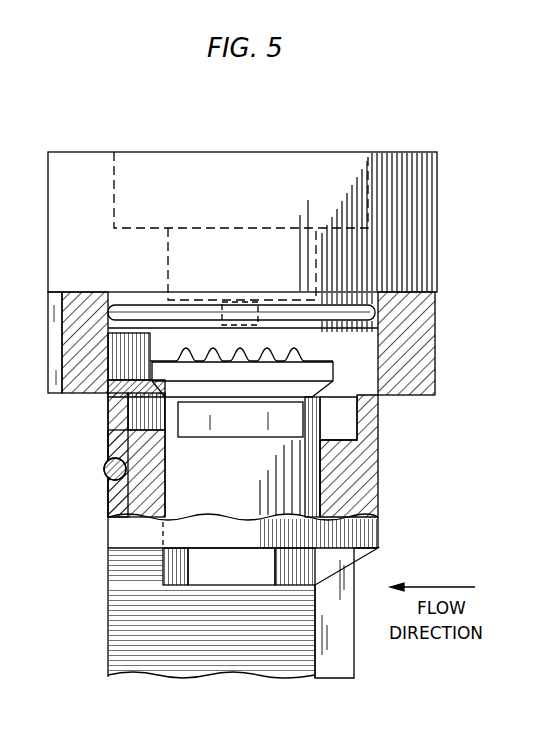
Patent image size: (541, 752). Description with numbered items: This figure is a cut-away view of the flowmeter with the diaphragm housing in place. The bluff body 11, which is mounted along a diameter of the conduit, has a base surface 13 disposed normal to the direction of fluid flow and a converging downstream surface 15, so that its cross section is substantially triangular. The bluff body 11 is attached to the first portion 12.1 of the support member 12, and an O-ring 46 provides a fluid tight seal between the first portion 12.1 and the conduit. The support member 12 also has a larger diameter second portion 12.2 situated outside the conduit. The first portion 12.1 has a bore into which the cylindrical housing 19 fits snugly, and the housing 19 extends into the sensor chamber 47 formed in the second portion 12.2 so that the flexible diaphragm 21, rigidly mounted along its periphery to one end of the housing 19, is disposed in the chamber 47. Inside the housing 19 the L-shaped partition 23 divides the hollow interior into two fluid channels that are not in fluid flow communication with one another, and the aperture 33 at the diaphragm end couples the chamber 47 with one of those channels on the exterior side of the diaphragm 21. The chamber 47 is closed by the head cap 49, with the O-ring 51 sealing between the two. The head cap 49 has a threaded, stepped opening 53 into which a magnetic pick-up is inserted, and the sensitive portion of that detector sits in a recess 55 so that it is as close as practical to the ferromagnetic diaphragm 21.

The head cap 49 is at (437, 214).
The threaded, stepped opening 53 is at (118, 176).
The recess 55 is at (240, 312).
The O-ring 51 is at (437, 305).
The support member 12 is at (436, 350).
The first portion 12.1 is at (108, 420).
The second portion 12.2 is at (48, 354).
The sensor chamber 47 is at (118, 356).
The flexible diaphragm 21 is at (303, 346).
The cylindrical housing 19 is at (322, 417).
The aperture 33 is at (237, 423).
The O-ring 46 is at (104, 470).
The L-shaped partition 23 is at (198, 563).
The bluff body 11 is at (125, 636).
The converging downstream surface 15 is at (212, 645).
The base surface 13 is at (340, 660).